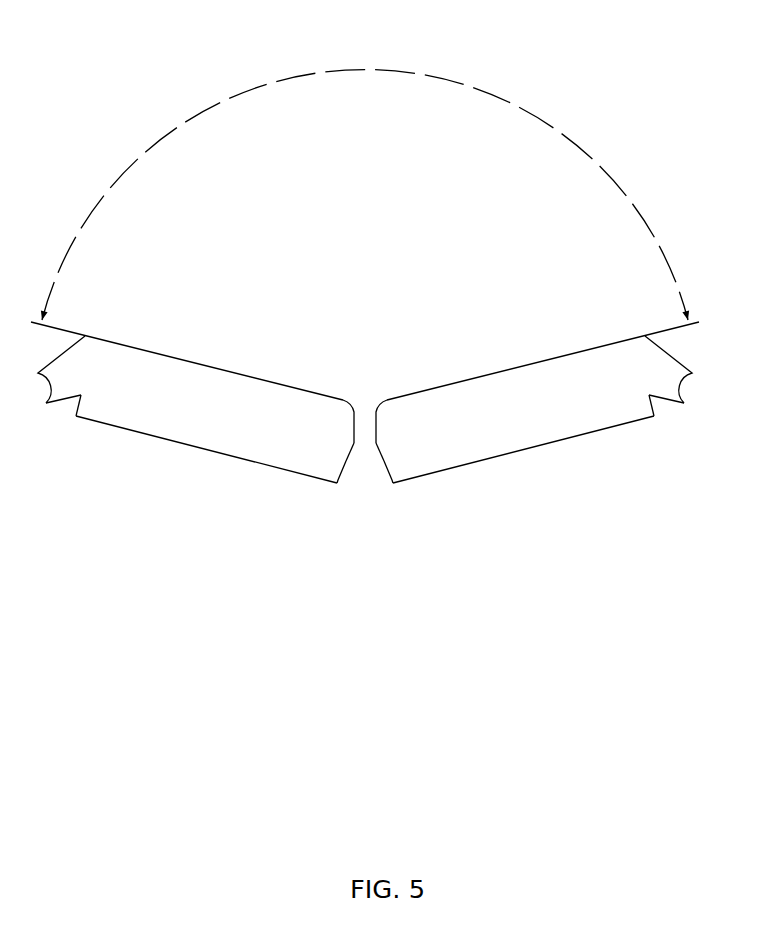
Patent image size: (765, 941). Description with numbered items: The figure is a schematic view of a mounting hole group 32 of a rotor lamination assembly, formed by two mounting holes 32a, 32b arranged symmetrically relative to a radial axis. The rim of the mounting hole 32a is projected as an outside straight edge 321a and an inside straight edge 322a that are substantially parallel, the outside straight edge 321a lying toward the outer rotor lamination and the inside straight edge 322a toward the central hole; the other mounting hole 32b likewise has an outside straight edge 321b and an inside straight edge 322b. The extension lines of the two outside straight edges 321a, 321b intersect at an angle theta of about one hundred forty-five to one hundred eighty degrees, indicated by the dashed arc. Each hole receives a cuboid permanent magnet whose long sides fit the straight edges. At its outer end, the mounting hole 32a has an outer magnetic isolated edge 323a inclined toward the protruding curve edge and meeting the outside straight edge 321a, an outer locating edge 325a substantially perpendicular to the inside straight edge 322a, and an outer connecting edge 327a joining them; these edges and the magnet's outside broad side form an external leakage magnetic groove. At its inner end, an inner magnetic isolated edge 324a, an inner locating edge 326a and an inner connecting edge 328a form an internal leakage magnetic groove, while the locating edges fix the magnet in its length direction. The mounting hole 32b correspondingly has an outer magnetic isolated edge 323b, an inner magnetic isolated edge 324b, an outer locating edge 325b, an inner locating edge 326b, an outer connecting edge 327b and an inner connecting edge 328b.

The mounting hole group 32 is at (578, 107).
The mounting hole 32a is at (192, 345).
The mounting hole 32b is at (537, 349).
The outside straight edge 321a is at (222, 368).
The outside straight edge 321b is at (507, 365).
The inside straight edge 322a is at (185, 448).
The inside straight edge 322b is at (543, 448).
The outer magnetic isolated edge 323a is at (88, 346).
The outer magnetic isolated edge 323b is at (629, 369).
The inner magnetic isolated edge 324a is at (351, 416).
The inner magnetic isolated edge 324b is at (380, 417).
The outer locating edge 325a is at (86, 403).
The outer locating edge 325b is at (645, 403).
The inner locating edge 326a is at (337, 466).
The inner locating edge 326b is at (396, 466).
The outer connecting edge 327a is at (50, 404).
The outer connecting edge 327b is at (678, 404).
The inner connecting edge 328a is at (350, 448).
The inner connecting edge 328b is at (383, 460).